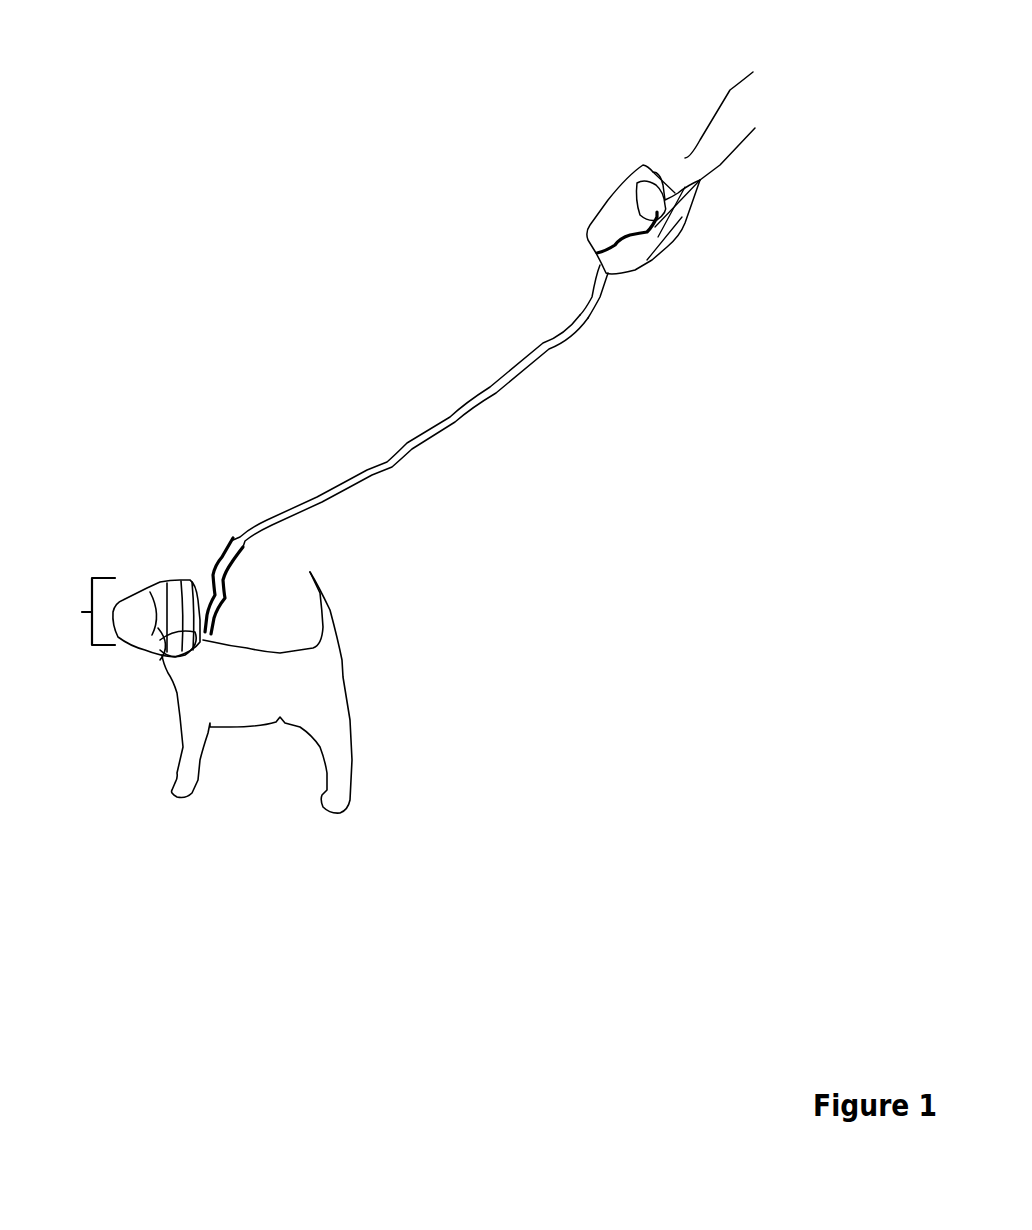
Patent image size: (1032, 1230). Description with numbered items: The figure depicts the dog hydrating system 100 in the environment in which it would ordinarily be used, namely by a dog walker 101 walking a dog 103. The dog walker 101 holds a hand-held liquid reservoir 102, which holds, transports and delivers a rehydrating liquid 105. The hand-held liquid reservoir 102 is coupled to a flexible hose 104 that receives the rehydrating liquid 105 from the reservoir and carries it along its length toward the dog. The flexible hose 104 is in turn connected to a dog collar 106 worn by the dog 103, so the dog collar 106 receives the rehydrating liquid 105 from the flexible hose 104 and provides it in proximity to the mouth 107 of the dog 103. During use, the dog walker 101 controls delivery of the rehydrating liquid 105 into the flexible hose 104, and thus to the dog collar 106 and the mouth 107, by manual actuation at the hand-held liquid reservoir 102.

The dog hydrating system 100 is at (203, 78).
The dog walker 101 is at (724, 86).
The hand-held liquid reservoir 102 is at (595, 191).
The dog 103 is at (350, 643).
The flexible hose 104 is at (468, 384).
The rehydrating liquid 105 is at (632, 255).
The dog collar 106 is at (211, 632).
The mouth 107 is at (88, 612).